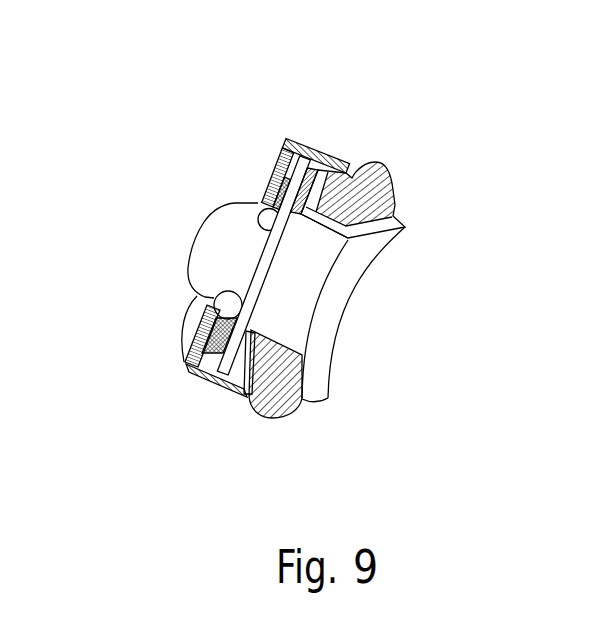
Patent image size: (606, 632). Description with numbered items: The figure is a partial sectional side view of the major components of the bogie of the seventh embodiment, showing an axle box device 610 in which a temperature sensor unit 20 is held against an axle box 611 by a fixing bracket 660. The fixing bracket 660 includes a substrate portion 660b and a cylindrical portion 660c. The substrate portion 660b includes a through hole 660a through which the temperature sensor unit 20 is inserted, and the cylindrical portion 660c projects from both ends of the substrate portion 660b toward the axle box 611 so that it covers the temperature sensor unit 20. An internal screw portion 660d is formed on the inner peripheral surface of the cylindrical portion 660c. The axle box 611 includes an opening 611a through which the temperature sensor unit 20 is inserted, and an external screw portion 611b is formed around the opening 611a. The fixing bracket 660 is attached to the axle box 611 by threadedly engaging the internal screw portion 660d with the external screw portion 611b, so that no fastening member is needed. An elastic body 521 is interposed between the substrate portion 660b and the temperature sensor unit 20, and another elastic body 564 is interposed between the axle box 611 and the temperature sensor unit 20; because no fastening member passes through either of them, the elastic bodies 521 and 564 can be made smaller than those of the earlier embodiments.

The axle box device 610 is at (478, 114).
The temperature sensor unit 20 is at (198, 225).
The elastic body 521 is at (200, 319).
The elastic body 564 is at (187, 367).
The fixing bracket 660 is at (218, 383).
The through hole 660a is at (266, 198).
The substrate portion 660b is at (282, 163).
The cylindrical portion 660c is at (309, 146).
The internal screw portion 660d is at (243, 390).
The axle box 611 is at (250, 400).
The opening 611a is at (343, 237).
The external screw portion 611b is at (338, 165).